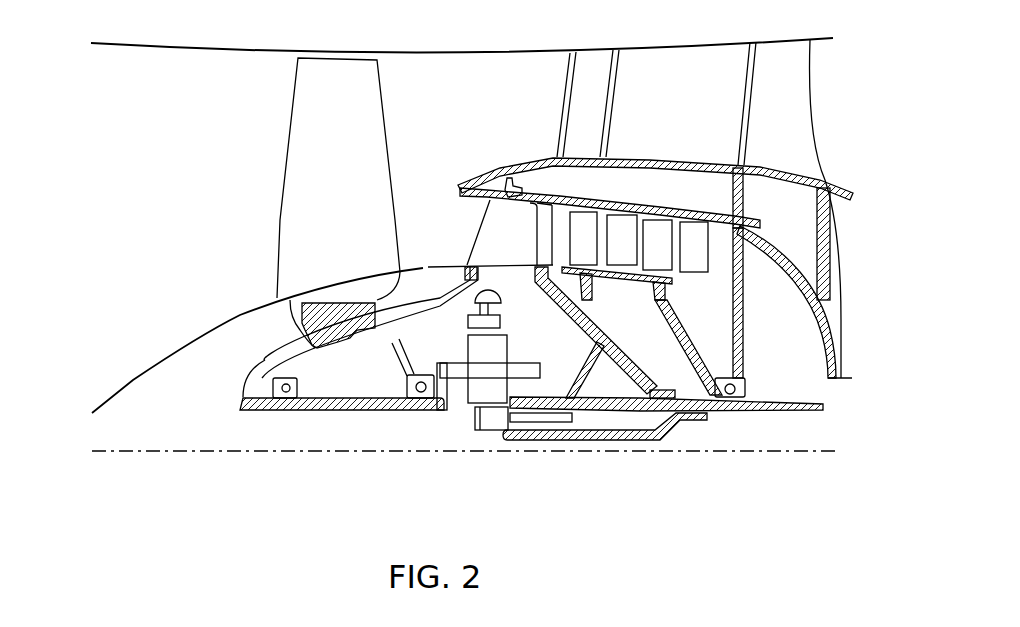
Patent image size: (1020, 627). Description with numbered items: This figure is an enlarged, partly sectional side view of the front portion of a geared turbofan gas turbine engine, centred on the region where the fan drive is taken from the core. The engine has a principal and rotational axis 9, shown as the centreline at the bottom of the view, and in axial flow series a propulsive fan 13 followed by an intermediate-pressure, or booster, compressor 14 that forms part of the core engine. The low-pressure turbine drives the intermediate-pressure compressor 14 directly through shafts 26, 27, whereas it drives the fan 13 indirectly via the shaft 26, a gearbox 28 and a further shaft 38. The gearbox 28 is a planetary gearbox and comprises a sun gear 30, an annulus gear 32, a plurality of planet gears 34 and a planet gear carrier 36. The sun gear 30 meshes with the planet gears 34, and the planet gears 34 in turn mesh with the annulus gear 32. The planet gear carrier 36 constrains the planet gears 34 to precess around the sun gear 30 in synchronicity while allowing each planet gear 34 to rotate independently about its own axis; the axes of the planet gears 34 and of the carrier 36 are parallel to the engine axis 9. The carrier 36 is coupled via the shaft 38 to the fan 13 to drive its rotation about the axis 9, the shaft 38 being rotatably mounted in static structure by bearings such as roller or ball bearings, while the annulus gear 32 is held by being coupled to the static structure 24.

The principal and rotational axis 9 is at (235, 452).
The propulsive fan 13 is at (310, 148).
The intermediate-pressure compressor 14 is at (658, 207).
The static structure 24 is at (500, 238).
The shaft 26 is at (723, 410).
The shaft 27 is at (687, 338).
The gearbox 28 is at (461, 394).
The sun gear 30 is at (488, 422).
The annulus gear 32 is at (497, 322).
The planet gears 34 is at (488, 373).
The planet gear carrier 36 is at (442, 385).
The shaft 38 is at (310, 413).